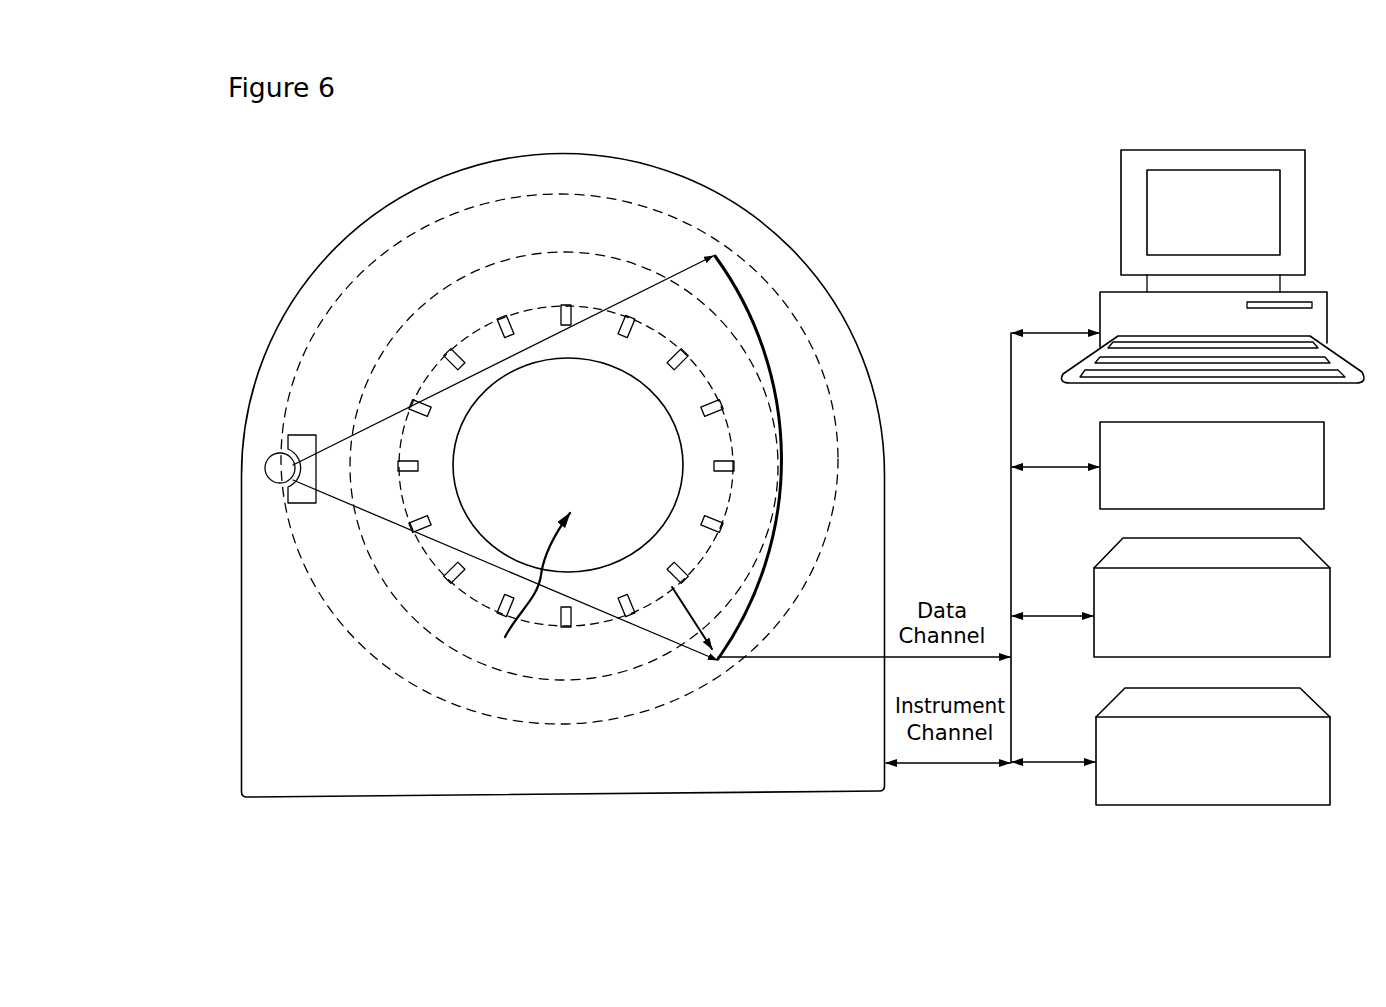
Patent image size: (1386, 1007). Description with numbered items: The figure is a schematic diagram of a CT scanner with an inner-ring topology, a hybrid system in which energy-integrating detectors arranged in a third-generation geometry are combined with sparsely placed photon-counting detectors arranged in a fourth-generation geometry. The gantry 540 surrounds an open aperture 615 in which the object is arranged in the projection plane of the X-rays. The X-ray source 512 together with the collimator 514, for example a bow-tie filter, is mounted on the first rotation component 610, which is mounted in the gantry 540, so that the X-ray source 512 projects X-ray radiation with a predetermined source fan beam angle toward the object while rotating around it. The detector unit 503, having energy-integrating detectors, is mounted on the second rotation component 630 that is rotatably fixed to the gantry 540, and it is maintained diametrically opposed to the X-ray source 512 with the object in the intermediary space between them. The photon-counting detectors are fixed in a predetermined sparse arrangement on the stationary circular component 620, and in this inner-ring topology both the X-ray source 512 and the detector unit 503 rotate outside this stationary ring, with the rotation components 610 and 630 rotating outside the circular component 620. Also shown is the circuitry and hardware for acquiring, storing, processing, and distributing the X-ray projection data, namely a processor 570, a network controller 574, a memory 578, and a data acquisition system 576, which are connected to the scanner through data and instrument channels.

The X-ray detector unit 503 is at (732, 277).
The gantry 540 is at (827, 292).
The collimator 514 is at (273, 452).
The X-ray source 512 is at (298, 504).
The first rotation component 610 is at (405, 683).
The circular component 620 is at (580, 307).
The second rotation component 630 is at (630, 670).
The open aperture 615 is at (523, 589).
The processor 570 is at (1213, 266).
The network controller 574 is at (1212, 465).
The memory 578 is at (1212, 597).
The data acquisition system 576 is at (1213, 746).